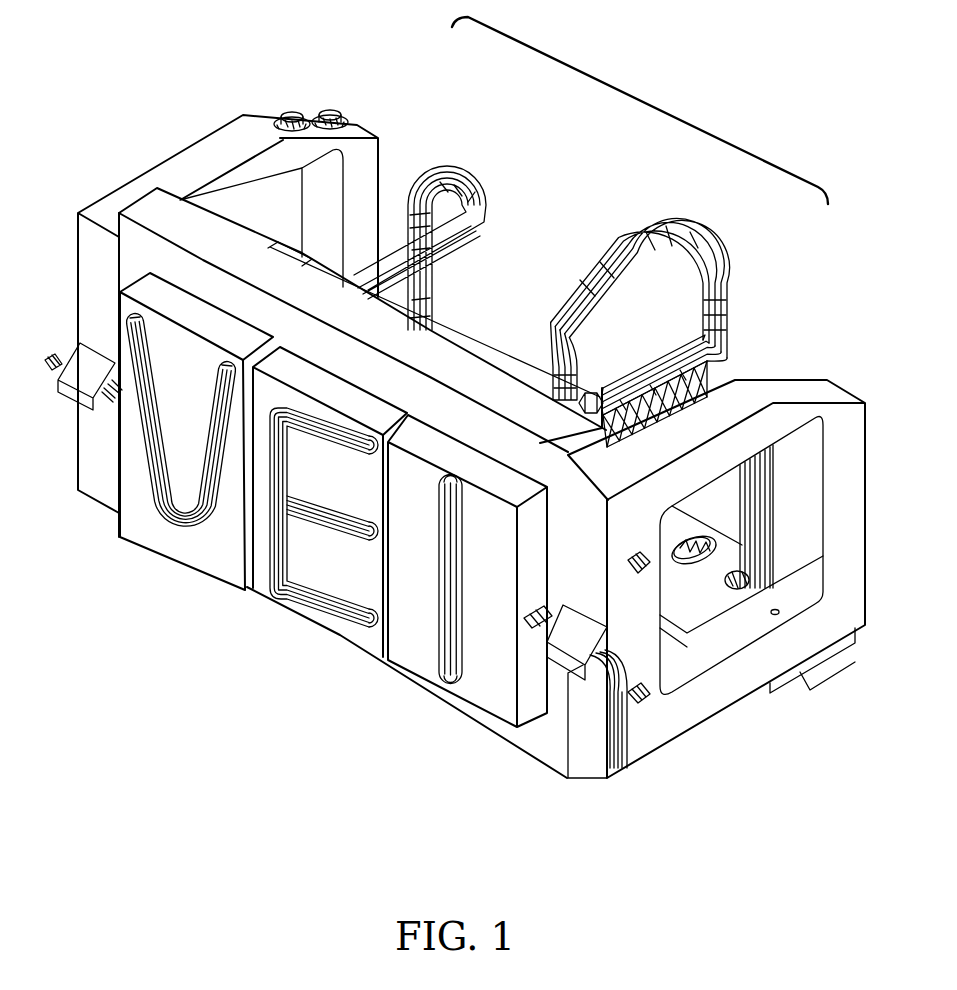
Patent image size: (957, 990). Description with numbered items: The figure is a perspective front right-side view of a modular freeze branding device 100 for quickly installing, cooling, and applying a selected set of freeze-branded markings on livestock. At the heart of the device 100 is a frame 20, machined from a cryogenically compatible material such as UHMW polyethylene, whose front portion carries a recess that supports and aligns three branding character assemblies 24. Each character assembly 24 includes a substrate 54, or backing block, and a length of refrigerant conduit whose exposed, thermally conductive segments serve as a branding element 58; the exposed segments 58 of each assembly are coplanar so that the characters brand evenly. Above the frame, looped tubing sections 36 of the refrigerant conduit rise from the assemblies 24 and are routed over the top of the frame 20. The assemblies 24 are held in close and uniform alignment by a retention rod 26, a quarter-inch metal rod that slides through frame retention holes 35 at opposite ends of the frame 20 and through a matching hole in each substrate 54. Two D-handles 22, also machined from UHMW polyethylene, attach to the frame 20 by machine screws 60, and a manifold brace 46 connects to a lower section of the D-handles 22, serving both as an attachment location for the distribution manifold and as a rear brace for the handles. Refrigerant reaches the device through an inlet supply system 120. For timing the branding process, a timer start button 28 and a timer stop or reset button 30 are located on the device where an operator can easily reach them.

The frame 20 is at (235, 238).
The D-handle 22 is at (362, 130).
The branding character assembly 24 is at (434, 400).
The retention rod 26 is at (52, 375).
The timer start button 28 is at (331, 110).
The timer stop or reset button 30 is at (290, 112).
The frame retention hole 35 is at (96, 410).
The tube 36 is at (462, 173).
The manifold brace 46 is at (710, 607).
The substrate 54 is at (232, 592).
The branding element 58 is at (172, 535).
The machine screw 60 is at (648, 700).
The freeze branding device 100 is at (206, 749).
The inlet supply system 120 is at (650, 108).